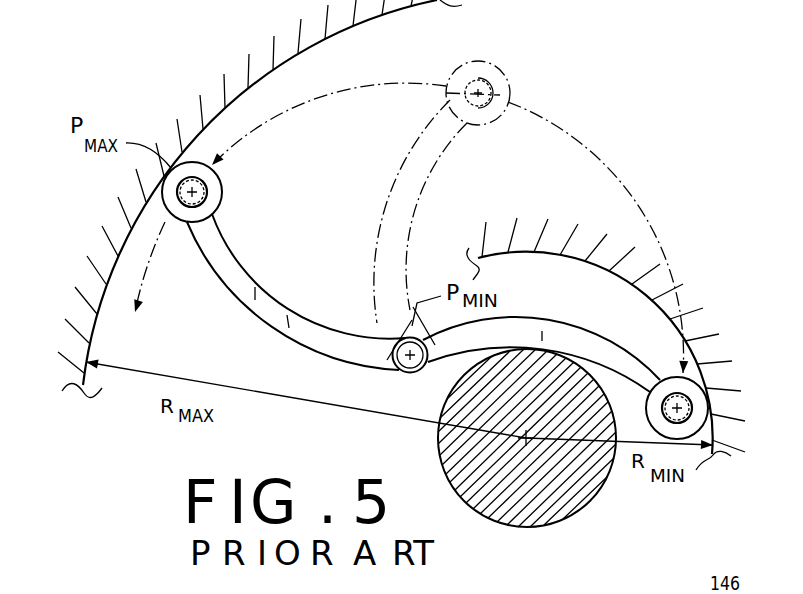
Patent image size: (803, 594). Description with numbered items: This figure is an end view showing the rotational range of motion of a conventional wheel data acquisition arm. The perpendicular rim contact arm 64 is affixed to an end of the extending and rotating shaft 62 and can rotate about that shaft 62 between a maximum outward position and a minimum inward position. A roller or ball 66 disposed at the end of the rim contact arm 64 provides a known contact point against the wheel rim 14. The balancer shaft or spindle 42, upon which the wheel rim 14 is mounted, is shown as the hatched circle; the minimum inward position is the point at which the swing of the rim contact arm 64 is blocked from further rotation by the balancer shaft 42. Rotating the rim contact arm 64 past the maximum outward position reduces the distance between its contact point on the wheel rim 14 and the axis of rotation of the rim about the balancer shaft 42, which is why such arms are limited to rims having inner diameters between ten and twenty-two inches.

The wheel rim 14 is at (450, 10).
The roller or ball 66 is at (223, 202).
The rim contact arm 64 is at (279, 297).
The extending and rotating shaft 62 is at (396, 368).
The balancer shaft or spindle 42 is at (677, 451).